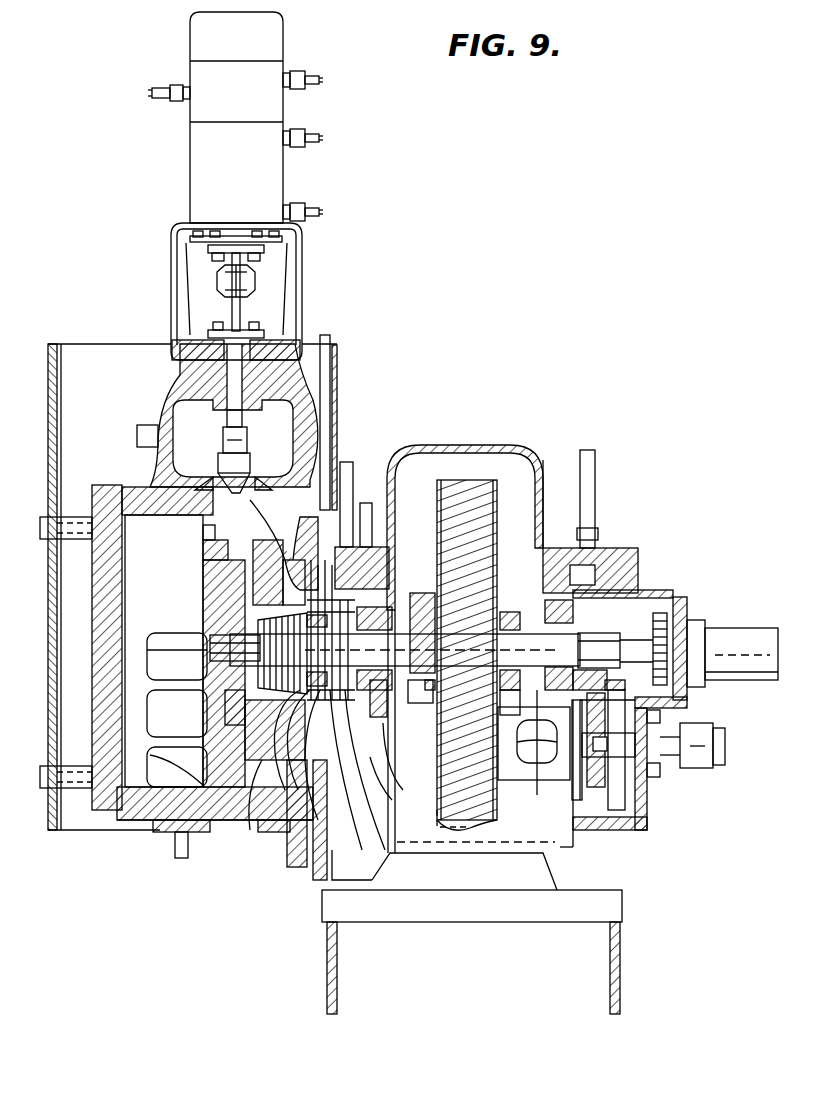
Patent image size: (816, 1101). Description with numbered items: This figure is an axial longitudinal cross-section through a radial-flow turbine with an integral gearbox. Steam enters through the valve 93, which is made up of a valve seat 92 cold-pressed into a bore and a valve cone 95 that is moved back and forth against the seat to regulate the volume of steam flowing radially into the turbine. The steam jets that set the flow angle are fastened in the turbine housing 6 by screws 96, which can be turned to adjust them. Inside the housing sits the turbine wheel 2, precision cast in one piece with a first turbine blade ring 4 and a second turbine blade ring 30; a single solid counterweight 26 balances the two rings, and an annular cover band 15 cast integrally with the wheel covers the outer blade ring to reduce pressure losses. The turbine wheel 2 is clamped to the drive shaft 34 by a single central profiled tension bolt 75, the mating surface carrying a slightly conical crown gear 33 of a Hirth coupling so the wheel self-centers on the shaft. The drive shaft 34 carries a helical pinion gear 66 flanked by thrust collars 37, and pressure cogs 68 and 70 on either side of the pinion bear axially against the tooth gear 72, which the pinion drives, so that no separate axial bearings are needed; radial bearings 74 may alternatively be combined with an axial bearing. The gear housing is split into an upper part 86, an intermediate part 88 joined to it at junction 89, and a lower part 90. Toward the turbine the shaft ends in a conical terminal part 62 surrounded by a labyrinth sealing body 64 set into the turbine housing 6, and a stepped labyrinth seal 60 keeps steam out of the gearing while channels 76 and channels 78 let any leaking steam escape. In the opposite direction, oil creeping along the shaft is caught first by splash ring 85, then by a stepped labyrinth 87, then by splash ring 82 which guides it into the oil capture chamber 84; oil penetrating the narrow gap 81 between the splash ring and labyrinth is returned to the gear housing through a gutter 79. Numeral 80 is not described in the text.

The turbine wheel 2 is at (220, 640).
The first turbine blade ring 4 is at (205, 562).
The turbine housing 6 is at (148, 803).
The annular cover band 15 is at (210, 578).
The counterweight 26 is at (250, 560).
The second turbine blade ring 30 is at (170, 713).
The crown gear 33 is at (230, 660).
The drive shaft 34 is at (534, 751).
The thrust collars 37 is at (450, 625).
The stepped labyrinth seal 60 is at (255, 702).
The conical terminal part 62 is at (425, 652).
The labyrinth sealing body 64 is at (205, 603).
The helical pinion gear 66 is at (530, 610).
The pressure cog 68 is at (430, 692).
The pressure cog 70 is at (445, 750).
The helical gear 72 is at (490, 498).
The radial bearings 74 is at (585, 650).
The central profiled tension bolt 75 is at (230, 700).
The channels 76 is at (260, 748).
The channels 78 is at (265, 810).
The gutter 79 is at (392, 766).
The gear housing 80 is at (485, 440).
The narrow gap 81 is at (296, 866).
The splash ring 82 is at (395, 572).
The oil capture chamber 84 is at (320, 878).
The splash ring 85 is at (375, 792).
The upper part 86 is at (530, 452).
The stepped labyrinth 87 is at (472, 932).
The intermediate part 88 is at (605, 552).
The junction 89 is at (595, 522).
The lower part 90 is at (575, 850).
The valve seat 92 is at (250, 480).
The valve 93 is at (205, 463).
The valve cone 95 is at (245, 458).
The screws 96 is at (203, 538).